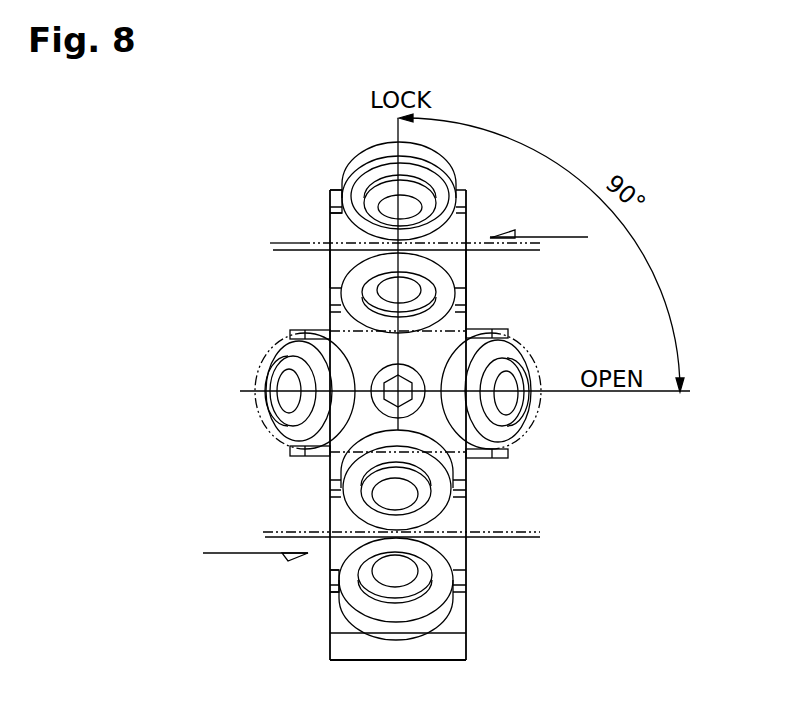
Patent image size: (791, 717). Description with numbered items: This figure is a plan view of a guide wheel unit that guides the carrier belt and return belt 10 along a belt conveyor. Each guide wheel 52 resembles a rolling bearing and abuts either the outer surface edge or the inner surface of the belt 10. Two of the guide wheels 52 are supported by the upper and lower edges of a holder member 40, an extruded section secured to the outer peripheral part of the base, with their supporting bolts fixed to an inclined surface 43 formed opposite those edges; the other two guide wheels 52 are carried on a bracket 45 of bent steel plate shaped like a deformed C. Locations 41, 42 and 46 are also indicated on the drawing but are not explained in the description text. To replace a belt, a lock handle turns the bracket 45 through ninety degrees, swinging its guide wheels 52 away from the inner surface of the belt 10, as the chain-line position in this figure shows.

The carrier belt and return belt 10 is at (288, 243).
The holder member 40 is at (314, 634).
The upper holder portion 41 is at (332, 271).
The upper bracket tab 42 is at (331, 198).
The inclined surface 43 is at (328, 585).
The bracket 45 is at (472, 311).
The hexagonal shaft 46 is at (392, 395).
The guide wheel 52 is at (367, 160).